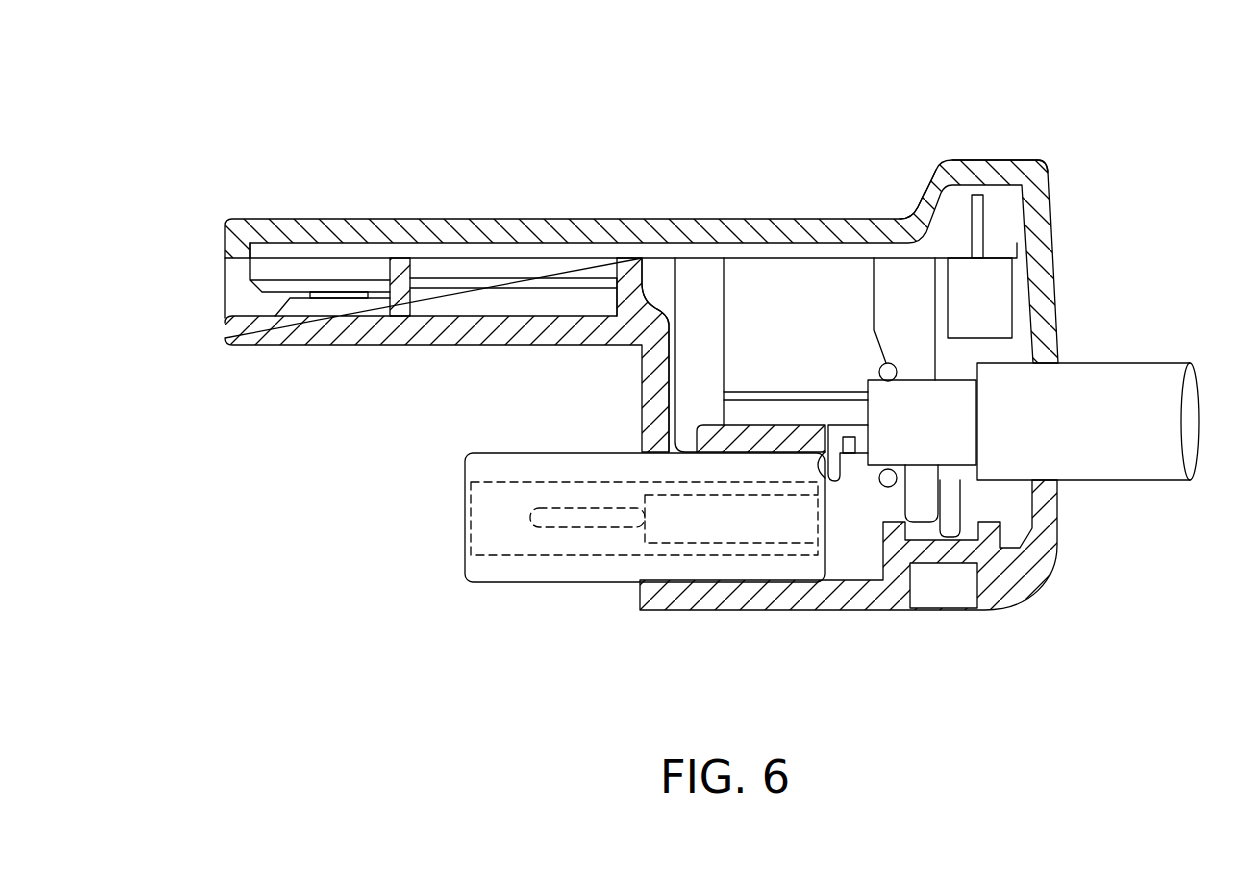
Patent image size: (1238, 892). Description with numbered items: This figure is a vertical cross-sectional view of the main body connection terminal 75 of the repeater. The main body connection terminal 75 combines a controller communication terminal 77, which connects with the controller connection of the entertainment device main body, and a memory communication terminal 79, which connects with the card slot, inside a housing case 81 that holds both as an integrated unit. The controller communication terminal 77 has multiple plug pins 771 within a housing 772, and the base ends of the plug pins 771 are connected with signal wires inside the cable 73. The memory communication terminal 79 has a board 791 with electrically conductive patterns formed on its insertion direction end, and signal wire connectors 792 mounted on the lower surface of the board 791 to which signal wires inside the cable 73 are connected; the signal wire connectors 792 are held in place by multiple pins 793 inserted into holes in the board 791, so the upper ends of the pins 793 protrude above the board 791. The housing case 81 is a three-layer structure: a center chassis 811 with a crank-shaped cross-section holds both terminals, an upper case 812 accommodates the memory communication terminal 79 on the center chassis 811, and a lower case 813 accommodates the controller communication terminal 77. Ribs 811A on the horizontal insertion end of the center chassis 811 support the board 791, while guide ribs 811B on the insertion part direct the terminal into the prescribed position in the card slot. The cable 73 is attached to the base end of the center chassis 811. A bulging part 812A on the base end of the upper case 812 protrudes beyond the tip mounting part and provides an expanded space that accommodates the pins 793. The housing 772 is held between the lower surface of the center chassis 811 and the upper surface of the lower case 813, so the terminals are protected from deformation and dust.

The cable 73 is at (1150, 379).
The main body connection terminal 75 is at (434, 124).
The controller communication terminal 77 is at (490, 573).
The plug pins 771 is at (580, 530).
The housing 772 is at (542, 588).
The memory communication terminal 79 is at (230, 236).
The board 791 is at (272, 252).
The signal wire connectors 792 is at (1000, 298).
The pins 793 is at (985, 222).
The housing case 81 is at (862, 216).
The center chassis 811 is at (487, 338).
The ribs 811A is at (627, 296).
The guide ribs 811B is at (400, 306).
The upper case 812 is at (583, 234).
The bulging part 812A is at (990, 163).
The lower case 813 is at (838, 603).